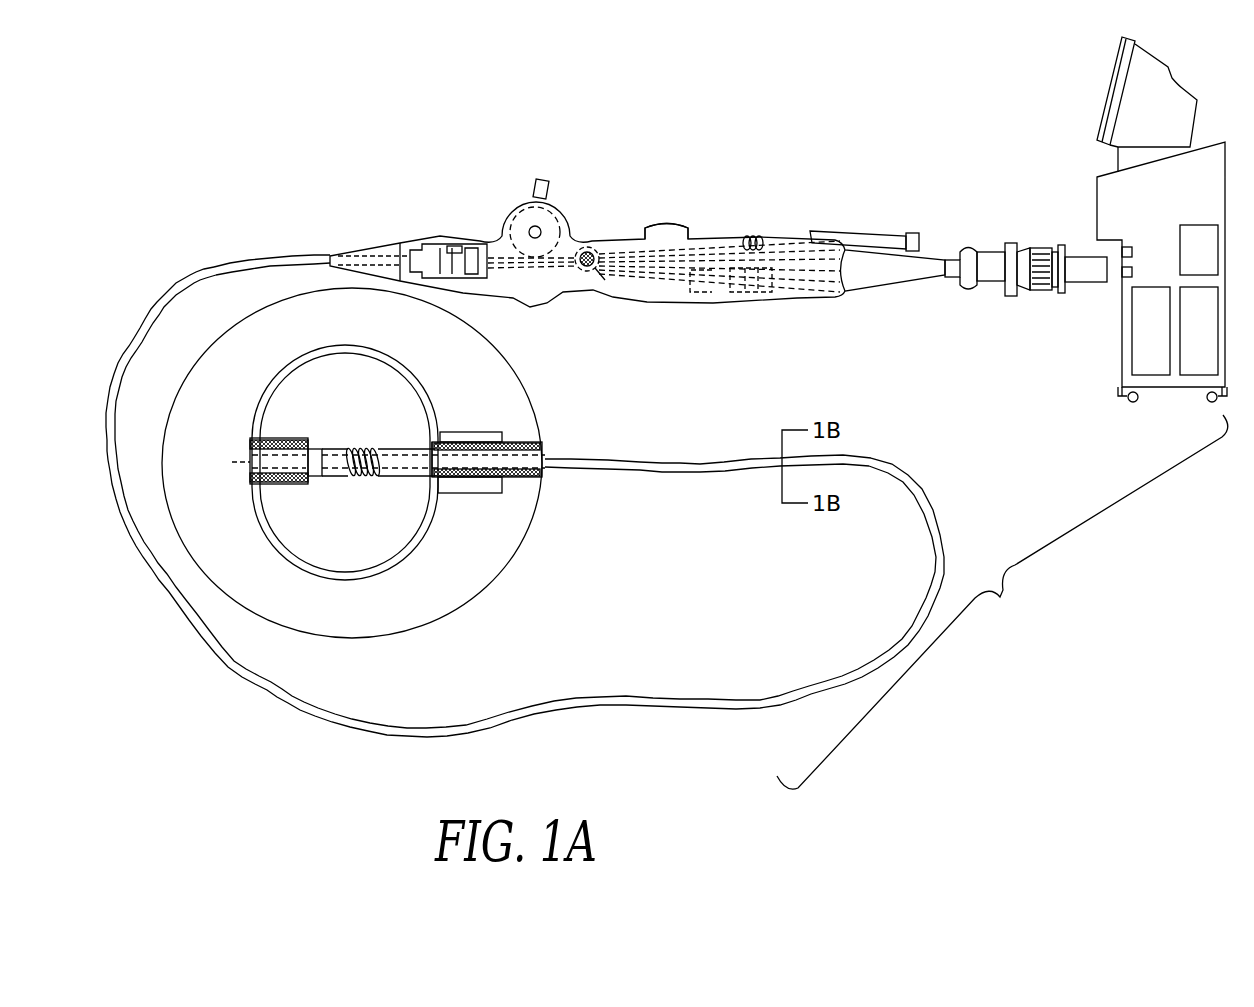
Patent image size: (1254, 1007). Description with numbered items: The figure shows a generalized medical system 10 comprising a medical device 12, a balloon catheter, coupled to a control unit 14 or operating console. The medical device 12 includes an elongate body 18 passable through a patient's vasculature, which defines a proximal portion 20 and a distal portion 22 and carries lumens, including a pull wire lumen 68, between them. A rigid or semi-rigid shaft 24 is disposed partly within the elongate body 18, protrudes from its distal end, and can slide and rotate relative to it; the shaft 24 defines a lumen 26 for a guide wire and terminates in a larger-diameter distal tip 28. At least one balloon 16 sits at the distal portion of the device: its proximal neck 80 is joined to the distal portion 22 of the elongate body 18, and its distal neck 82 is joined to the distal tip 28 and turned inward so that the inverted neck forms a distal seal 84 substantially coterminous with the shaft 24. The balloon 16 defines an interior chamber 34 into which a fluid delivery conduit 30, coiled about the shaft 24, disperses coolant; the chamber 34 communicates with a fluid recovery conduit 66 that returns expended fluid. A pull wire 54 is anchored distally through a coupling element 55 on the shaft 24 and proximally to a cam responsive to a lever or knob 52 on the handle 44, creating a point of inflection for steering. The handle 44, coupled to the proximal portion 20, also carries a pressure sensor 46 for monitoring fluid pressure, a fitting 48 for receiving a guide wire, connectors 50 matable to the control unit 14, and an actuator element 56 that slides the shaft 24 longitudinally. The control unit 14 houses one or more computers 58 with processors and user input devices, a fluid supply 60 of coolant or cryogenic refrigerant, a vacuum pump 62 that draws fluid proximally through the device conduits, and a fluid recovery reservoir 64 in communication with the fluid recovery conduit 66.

The medical system 10 is at (1002, 602).
The medical device 12 is at (395, 122).
The control unit 14 is at (1149, 217).
The balloon 16 is at (272, 368).
The elongate body 18 is at (228, 667).
The proximal portion 20 is at (228, 266).
The distal portion 22 is at (622, 458).
The shaft 24 is at (382, 476).
The lumen 26 is at (247, 460).
The distal tip 28 is at (248, 449).
The fluid delivery conduit 30 is at (405, 476).
The interior chamber 34 is at (357, 562).
The handle 44 is at (753, 236).
The pressure sensor 46 is at (470, 247).
The fitting 48 is at (870, 232).
The connectors 50 is at (980, 248).
The lever or knob 52 is at (541, 180).
The pull wire 54 is at (408, 446).
The coupling element 55 is at (313, 478).
The actuator element 56 is at (670, 225).
The computer 58 is at (1182, 104).
The fluid supply 60 is at (1214, 340).
The vacuum pump 62 is at (1214, 260).
The fluid recovery reservoir 64 is at (1166, 340).
The fluid recovery conduit 66 is at (432, 445).
The pull wire lumen 68 is at (517, 443).
The proximal neck 80 is at (477, 437).
The distal neck 82 is at (285, 440).
The distal seal 84 is at (310, 448).